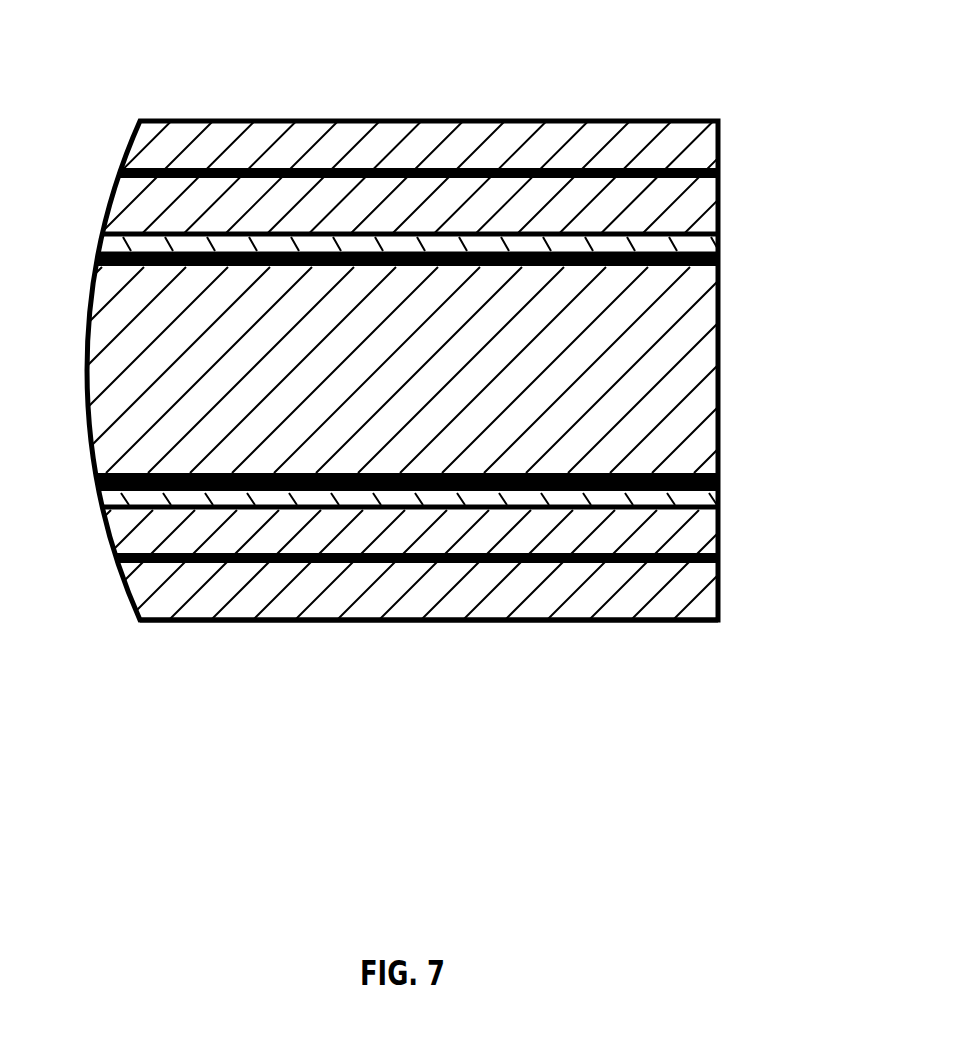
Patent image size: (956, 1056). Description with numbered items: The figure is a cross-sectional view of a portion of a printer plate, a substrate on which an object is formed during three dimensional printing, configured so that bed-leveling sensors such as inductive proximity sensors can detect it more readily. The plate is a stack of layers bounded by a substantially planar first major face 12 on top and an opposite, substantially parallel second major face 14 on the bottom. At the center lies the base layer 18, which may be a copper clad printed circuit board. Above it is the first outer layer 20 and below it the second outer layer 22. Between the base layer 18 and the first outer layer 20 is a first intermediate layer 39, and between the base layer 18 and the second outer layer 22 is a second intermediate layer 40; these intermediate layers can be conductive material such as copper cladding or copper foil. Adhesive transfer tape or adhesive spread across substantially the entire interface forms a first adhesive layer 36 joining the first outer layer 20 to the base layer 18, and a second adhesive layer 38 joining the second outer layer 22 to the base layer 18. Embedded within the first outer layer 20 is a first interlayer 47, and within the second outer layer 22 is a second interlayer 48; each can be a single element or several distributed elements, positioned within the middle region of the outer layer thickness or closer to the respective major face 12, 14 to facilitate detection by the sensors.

The first major face 12 is at (360, 95).
The second major face 14 is at (413, 640).
The base layer 18 is at (157, 360).
The first outer layer 20 is at (597, 140).
The second outer layer 22 is at (538, 593).
The first adhesive layer 36 is at (97, 242).
The second adhesive layer 38 is at (97, 495).
The first intermediate layer 39 is at (695, 256).
The second intermediate layer 40 is at (700, 481).
The first interlayer 47 is at (700, 174).
The second interlayer 48 is at (692, 556).